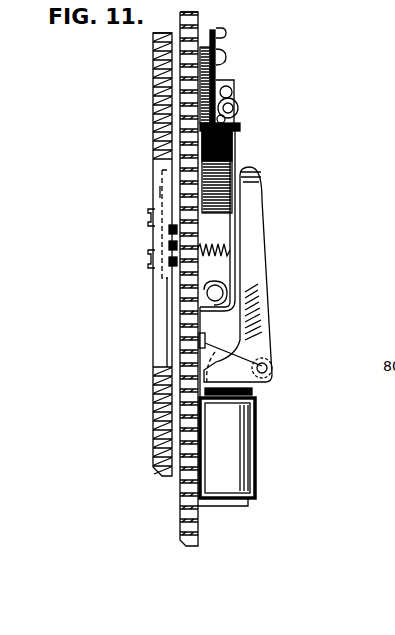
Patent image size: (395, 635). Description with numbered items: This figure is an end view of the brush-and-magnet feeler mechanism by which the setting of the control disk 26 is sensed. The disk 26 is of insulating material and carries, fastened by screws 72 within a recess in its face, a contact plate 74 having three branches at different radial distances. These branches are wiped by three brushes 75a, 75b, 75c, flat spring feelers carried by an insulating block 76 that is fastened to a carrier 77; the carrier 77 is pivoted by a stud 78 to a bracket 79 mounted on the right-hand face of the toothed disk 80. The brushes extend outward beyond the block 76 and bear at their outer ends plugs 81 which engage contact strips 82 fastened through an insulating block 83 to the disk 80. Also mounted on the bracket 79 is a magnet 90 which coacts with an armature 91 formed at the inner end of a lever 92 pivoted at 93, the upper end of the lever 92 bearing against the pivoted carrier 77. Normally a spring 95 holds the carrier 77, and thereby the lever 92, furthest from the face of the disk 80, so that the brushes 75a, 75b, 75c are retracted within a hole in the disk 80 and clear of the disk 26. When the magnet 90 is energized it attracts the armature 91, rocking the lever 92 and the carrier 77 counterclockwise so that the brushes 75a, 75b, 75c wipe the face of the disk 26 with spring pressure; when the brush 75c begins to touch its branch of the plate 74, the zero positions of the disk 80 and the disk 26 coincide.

The disk 26 is at (163, 428).
The screws 72 is at (148, 214).
The contact plate 74 is at (163, 192).
The brush 75a is at (170, 229).
The brush 75b is at (172, 245).
The brush 75c is at (174, 262).
The insulating block 76 is at (233, 164).
The carrier 77 is at (232, 226).
The stud 78 is at (215, 285).
The bracket 79 is at (205, 353).
The toothed disk 80 is at (196, 519).
The plugs 81 is at (230, 107).
The contact strips 82 is at (218, 45).
The insulating block 83 is at (219, 65).
The magnet 90 is at (258, 455).
The armature 91 is at (252, 392).
The lever 92 is at (262, 292).
The pivot 93 is at (267, 368).
The spring 95 is at (212, 244).